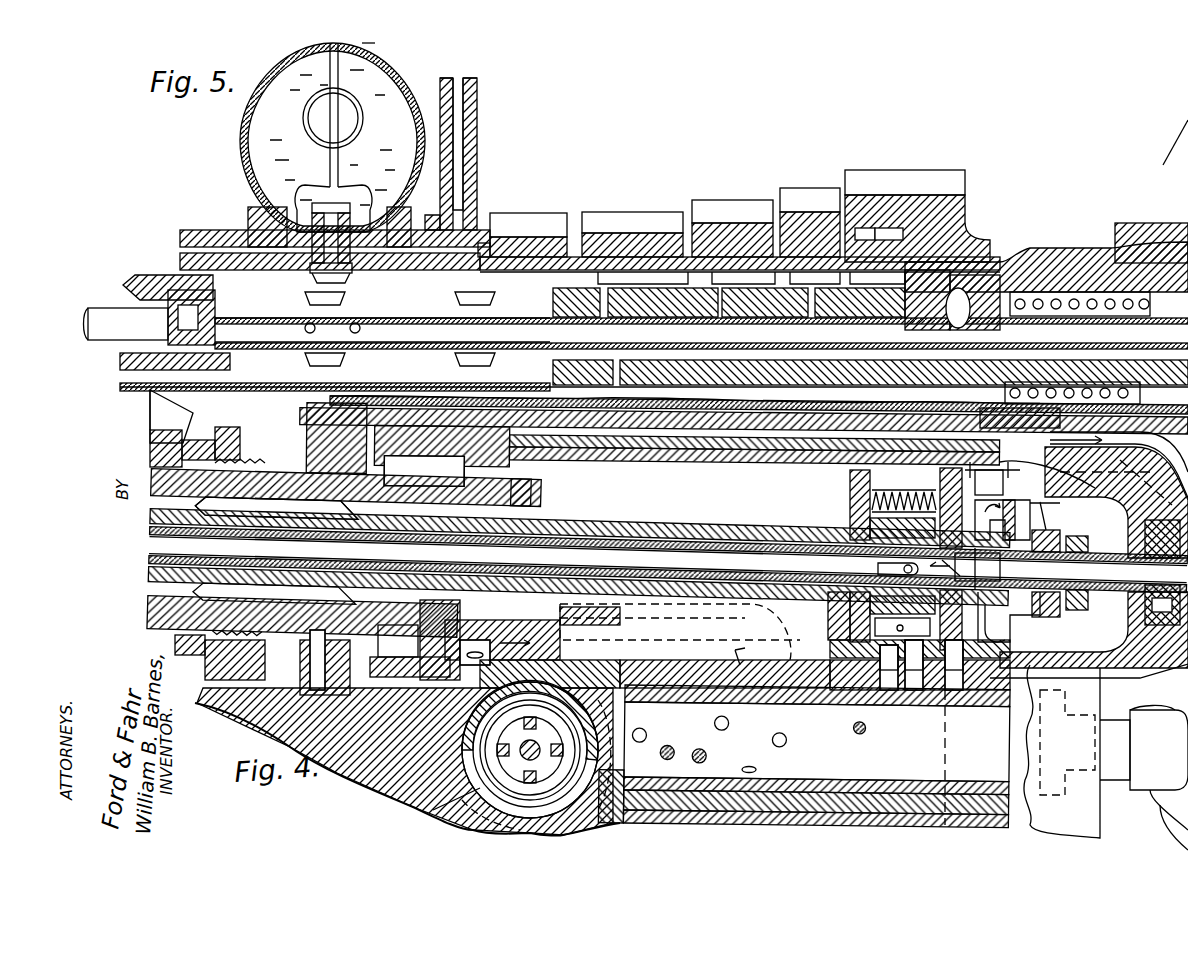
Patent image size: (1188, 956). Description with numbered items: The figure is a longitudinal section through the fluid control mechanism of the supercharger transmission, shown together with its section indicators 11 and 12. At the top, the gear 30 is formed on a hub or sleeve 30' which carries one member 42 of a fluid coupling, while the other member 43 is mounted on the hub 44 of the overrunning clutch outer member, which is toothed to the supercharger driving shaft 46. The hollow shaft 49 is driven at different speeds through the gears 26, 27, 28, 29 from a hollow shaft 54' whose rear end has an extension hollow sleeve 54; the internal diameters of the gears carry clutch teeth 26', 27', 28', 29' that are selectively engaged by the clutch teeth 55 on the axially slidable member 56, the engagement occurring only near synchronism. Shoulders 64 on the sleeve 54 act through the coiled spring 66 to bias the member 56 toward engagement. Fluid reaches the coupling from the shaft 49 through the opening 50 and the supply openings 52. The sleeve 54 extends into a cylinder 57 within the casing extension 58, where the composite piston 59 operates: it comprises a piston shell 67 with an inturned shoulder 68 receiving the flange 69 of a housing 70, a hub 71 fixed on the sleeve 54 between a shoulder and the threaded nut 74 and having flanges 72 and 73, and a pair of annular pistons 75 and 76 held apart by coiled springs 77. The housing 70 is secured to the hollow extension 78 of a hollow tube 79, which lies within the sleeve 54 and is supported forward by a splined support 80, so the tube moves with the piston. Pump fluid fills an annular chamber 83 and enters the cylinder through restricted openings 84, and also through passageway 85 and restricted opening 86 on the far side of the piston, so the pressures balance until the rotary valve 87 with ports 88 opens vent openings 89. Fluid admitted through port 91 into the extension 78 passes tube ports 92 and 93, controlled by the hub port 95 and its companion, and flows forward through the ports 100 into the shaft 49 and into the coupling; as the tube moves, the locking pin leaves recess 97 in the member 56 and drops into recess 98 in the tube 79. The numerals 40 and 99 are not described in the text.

In FIG. 4, the section line 11 is at (918, 424).
In FIG. 4, the section line 12 is at (953, 828).
In FIG. 4, the gear 26 is at (917, 196).
In FIG. 4, the clutch teeth 26' is at (874, 281).
In FIG. 4, the gear 27 is at (810, 200).
In FIG. 4, the clutch teeth 27' is at (815, 283).
In FIG. 4, the gear 28 is at (732, 204).
In FIG. 4, the clutch teeth 28' is at (743, 283).
In FIG. 4, the gear 29 is at (632, 209).
In FIG. 4, the clutch teeth 29' is at (643, 283).
In FIG. 4, the gear 30 is at (530, 216).
In FIG. 4, the hub or sleeve 30' is at (502, 213).
In FIG. 4, the sleeve 40 is at (1022, 262).
In FIG. 5, the fluid coupling member 42 is at (412, 100).
In FIG. 5, the fluid coupling member 43 is at (245, 128).
In FIG. 5, the hub 44 is at (222, 222).
In FIG. 4, the driving shaft 46 is at (203, 370).
In FIG. 4, the hollow shaft 49 is at (400, 275).
In FIG. 4, the opening 50 is at (350, 272).
In FIG. 5, the supply openings 52 is at (328, 228).
In FIG. 4, the extension hollow sleeve 54 is at (668, 542).
In FIG. 4, the hollow shaft 54' is at (701, 316).
In FIG. 4, the clutch teeth 55 is at (938, 272).
In FIG. 4, the axially slidable member 56 is at (1000, 270).
In FIG. 4, the cylinder 57 is at (648, 462).
In FIG. 4, the casing extension 58 is at (652, 417).
In FIG. 5, the piston 59 is at (375, 43).
In FIG. 4, the piston 59 is at (829, 509).
In FIG. 4, the shoulders 64 is at (1052, 292).
In FIG. 4, the coiled spring 66 is at (1074, 300).
In FIG. 4, the piston shell 67 is at (908, 700).
In FIG. 4, the inturned annular shoulder 68 is at (848, 483).
In FIG. 4, the flange 69 is at (962, 705).
In FIG. 4, the housing 70 is at (1050, 510).
In FIG. 4, the hub 71 is at (848, 630).
In FIG. 4, the annular flange 72 is at (832, 610).
In FIG. 4, the annular flange 73 is at (1020, 642).
In FIG. 4, the threaded nut 74 is at (988, 535).
In FIG. 4, the annular piston 75 is at (845, 698).
In FIG. 4, the annular piston 76 is at (912, 700).
In FIG. 4, the coiled springs 77 is at (942, 478).
In FIG. 4, the hollow extension 78 is at (1180, 650).
In FIG. 4, the hollow tube 79 is at (728, 573).
In FIG. 4, the splined support 80 is at (258, 357).
In FIG. 4, the annular chamber 83 is at (428, 640).
In FIG. 4, the restricted openings 84 is at (545, 467).
In FIG. 4, the conduit or passageway 85 is at (728, 437).
In FIG. 4, the restricted opening 86 is at (1082, 446).
In FIG. 4, the rotary valve 87 is at (1005, 805).
In FIG. 4, the ports 88 is at (700, 752).
In FIG. 4, the vent openings 89 is at (733, 655).
In FIG. 4, the port 91 is at (992, 478).
In FIG. 4, the port 92 is at (965, 569).
In FIG. 4, the port 93 is at (840, 552).
In FIG. 4, the port 95 is at (966, 325).
In FIG. 4, the recess 97 is at (960, 290).
In FIG. 4, the recess 98 is at (955, 320).
In FIG. 4, the clutch member 99 is at (1050, 612).
In FIG. 4, the ports 100 is at (357, 335).